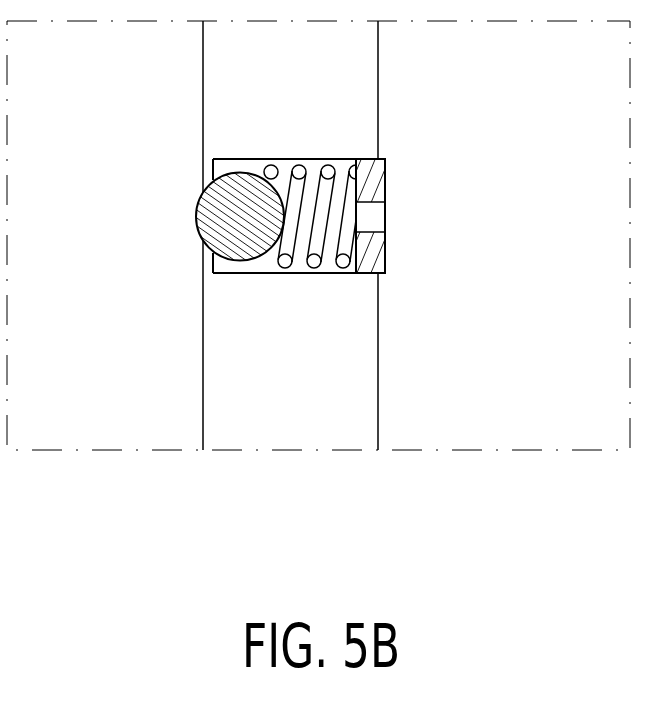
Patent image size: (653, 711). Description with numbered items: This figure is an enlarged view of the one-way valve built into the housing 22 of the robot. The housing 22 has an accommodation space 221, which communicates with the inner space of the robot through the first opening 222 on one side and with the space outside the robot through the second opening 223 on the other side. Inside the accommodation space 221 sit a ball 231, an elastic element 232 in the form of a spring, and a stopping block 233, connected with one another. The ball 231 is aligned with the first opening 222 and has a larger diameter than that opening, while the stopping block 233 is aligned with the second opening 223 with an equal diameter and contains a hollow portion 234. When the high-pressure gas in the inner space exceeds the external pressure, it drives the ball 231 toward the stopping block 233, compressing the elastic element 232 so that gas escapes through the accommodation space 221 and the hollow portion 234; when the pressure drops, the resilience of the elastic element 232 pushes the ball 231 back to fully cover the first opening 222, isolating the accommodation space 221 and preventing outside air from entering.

The housing 22 is at (343, 71).
The accommodation space 221 is at (237, 165).
The first opening 222 is at (202, 193).
The second opening 223 is at (384, 158).
The ball 231 is at (220, 222).
The elastic element 232 is at (283, 263).
The stopping block 233 is at (373, 270).
The hollow portion 234 is at (371, 222).